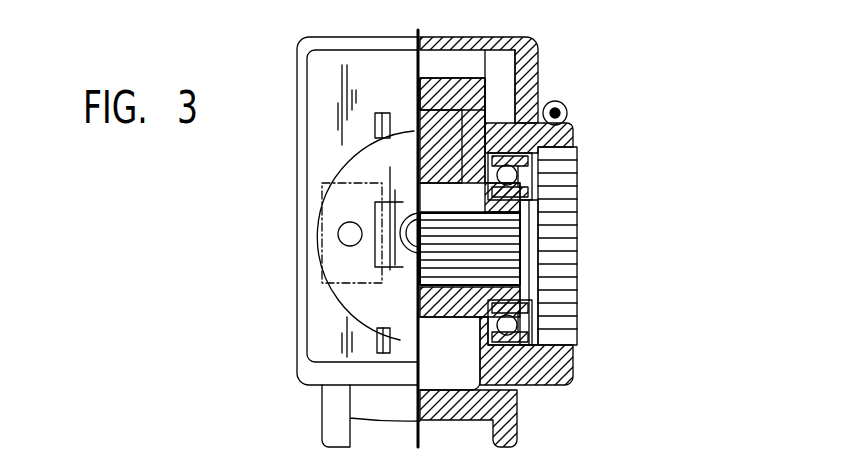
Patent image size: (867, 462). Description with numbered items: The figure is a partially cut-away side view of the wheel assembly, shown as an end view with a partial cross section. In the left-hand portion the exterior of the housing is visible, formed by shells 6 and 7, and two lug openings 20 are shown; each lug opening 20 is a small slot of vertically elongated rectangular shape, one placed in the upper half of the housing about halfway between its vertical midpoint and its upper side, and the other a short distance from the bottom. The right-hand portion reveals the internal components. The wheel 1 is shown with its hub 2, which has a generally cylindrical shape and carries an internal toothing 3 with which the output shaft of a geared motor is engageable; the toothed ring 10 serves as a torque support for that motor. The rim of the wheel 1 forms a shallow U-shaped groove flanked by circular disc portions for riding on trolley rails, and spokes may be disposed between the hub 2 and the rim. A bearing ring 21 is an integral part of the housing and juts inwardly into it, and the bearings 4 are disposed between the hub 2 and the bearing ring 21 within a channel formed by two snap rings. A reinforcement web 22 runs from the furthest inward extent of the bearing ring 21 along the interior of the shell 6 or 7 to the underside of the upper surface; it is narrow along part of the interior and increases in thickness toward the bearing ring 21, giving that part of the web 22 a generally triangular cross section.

The wheel 1 is at (525, 92).
The hub 2 is at (538, 200).
The internal toothing 3 is at (535, 277).
The bearings 4 is at (540, 317).
The shell 6 is at (327, 63).
The shell 7 is at (530, 53).
The toothed ring 10 is at (573, 150).
The lug openings 20 is at (375, 127).
The bearing ring 21 is at (570, 363).
The reinforcement web 22 is at (567, 116).